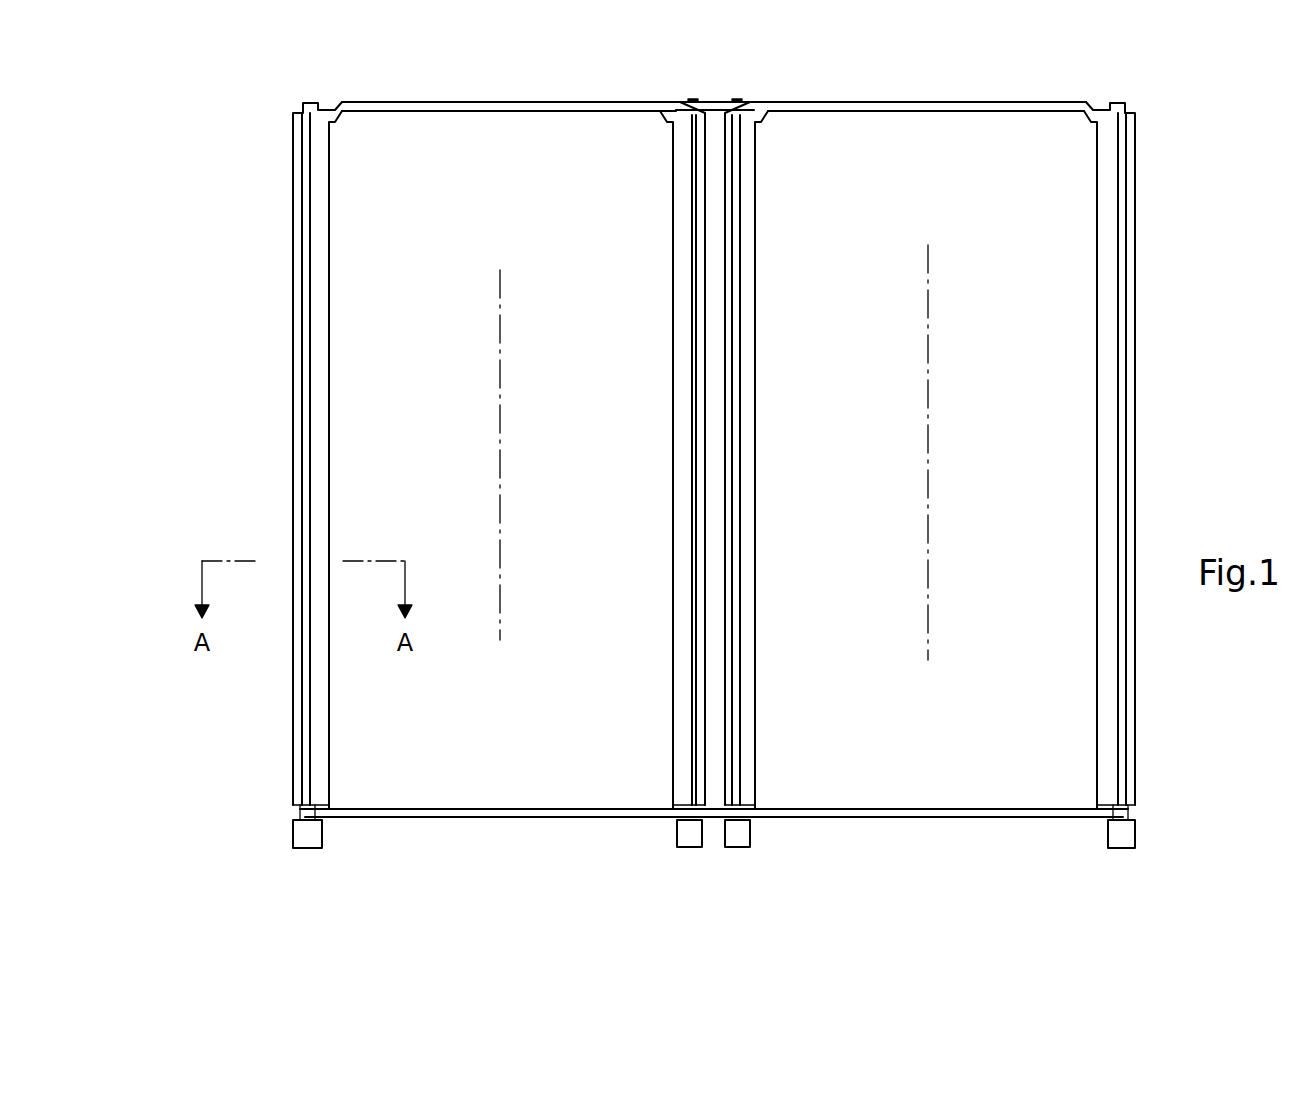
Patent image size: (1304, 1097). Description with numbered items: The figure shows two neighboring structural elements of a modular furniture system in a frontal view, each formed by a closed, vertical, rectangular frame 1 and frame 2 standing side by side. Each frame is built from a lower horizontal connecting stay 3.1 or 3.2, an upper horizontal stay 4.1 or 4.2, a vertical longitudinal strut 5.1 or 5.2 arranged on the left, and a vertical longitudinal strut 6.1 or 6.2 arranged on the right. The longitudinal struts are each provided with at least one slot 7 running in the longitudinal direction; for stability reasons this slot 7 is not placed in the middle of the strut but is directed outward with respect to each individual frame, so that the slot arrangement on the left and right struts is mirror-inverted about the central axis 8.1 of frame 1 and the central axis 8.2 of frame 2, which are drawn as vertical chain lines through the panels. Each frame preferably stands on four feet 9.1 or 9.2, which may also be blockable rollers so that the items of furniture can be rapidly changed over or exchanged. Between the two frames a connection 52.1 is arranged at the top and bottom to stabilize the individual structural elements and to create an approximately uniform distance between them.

The frame 1 is at (268, 180).
The frame 2 is at (1168, 168).
The lower horizontal connecting stay 3.1 is at (460, 818).
The lower horizontal connecting stay 3.2 is at (920, 818).
The upper horizontal stay 4.1 is at (418, 103).
The upper horizontal stay 4.2 is at (895, 103).
The vertical longitudinal strut 5.1 is at (293, 358).
The vertical longitudinal strut 5.2 is at (757, 339).
The vertical longitudinal strut 6.1 is at (672, 336).
The vertical longitudinal strut 6.2 is at (1140, 346).
The slot 7 is at (305, 268).
The central axis 8.1 is at (497, 346).
The central axis 8.2 is at (931, 346).
The feet 9.1 is at (293, 834).
The feet 9.2 is at (750, 833).
The connection 52.1 is at (712, 103).